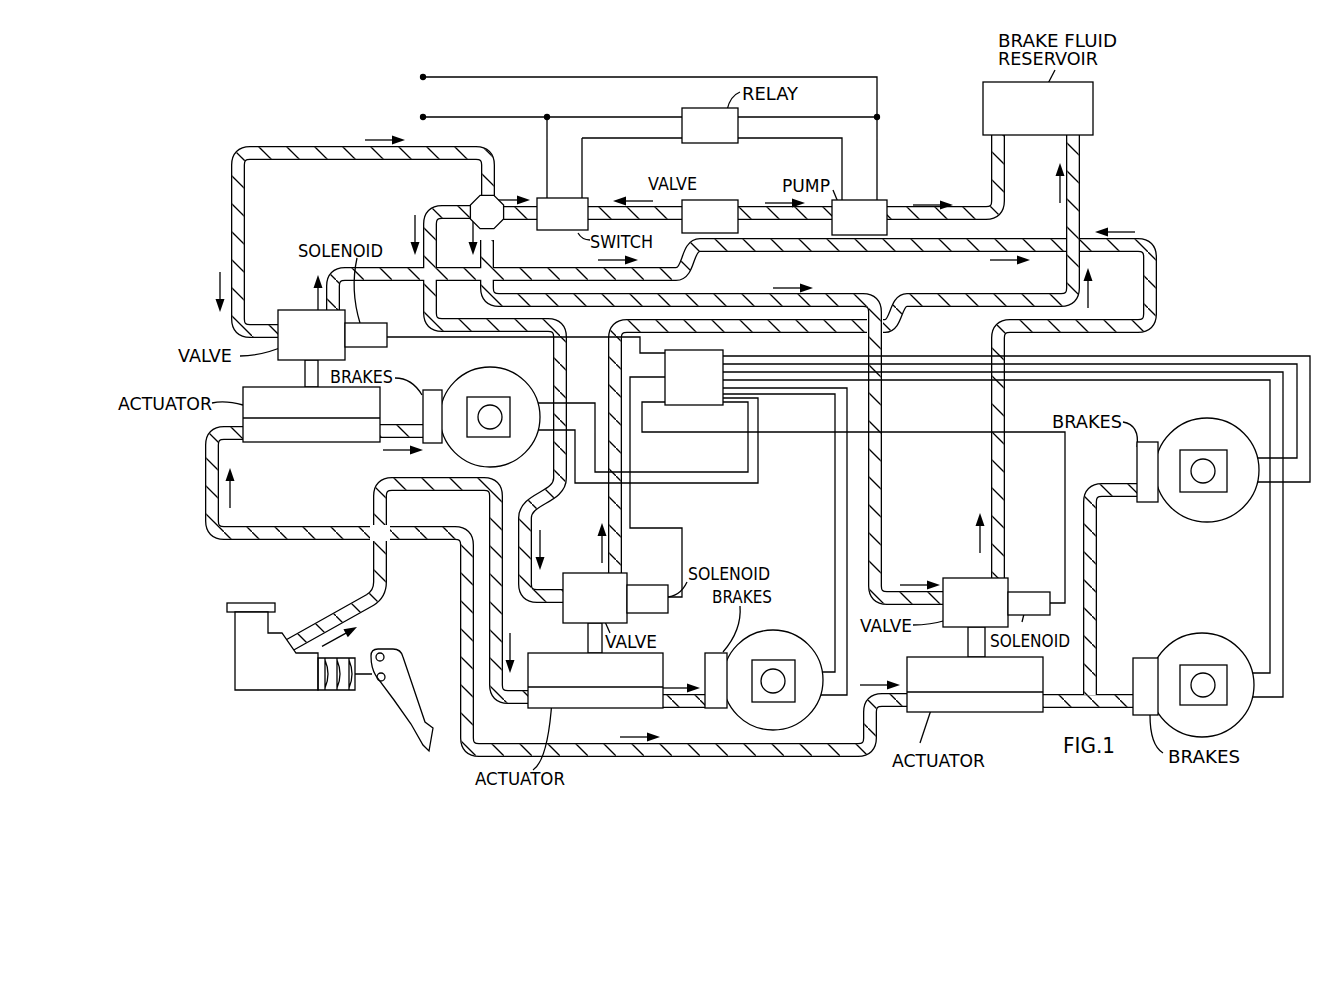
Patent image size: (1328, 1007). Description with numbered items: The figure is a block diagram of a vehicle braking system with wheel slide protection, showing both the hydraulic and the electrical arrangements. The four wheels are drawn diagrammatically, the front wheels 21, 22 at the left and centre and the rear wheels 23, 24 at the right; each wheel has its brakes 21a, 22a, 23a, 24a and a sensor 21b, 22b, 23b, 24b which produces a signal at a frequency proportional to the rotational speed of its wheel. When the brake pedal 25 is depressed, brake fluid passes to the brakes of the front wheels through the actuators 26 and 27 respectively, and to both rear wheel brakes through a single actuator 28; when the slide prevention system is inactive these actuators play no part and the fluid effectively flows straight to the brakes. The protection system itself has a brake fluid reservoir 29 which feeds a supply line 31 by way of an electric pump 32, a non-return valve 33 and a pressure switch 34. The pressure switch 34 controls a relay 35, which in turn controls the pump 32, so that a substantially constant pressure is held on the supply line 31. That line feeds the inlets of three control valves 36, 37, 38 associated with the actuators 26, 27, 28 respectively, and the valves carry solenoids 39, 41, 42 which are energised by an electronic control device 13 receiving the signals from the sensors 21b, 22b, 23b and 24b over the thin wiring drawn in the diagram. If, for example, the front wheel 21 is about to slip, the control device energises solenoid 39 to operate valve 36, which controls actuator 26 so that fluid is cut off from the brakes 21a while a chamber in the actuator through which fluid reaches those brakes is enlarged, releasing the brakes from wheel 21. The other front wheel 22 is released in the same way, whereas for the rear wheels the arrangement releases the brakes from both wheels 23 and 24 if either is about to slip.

The control unit 13 is at (702, 362).
The front wheel 21 is at (478, 378).
The brakes 21a is at (437, 398).
The sensor 21b is at (500, 405).
The front wheel 22 is at (773, 643).
The brakes 22a is at (723, 665).
The sensor 22b is at (790, 695).
The rear wheel 23 is at (1217, 510).
The brakes 23a is at (1147, 460).
The sensor 23b is at (1217, 458).
The rear wheel 24 is at (1220, 647).
The brakes 24a is at (1148, 668).
The sensor 24b is at (1213, 698).
The brake pedal 25 is at (393, 697).
The actuator 26 is at (323, 447).
The actuator 27 is at (590, 712).
The actuator 28 is at (958, 715).
The brake fluid reservoir 29 is at (1075, 108).
The supply line 31 is at (507, 193).
The electric pump 32 is at (870, 217).
The non-return valve 33 is at (697, 215).
The pressure switch 34 is at (583, 203).
The relay 35 is at (718, 130).
The control valve 36 is at (308, 317).
The control valve 37 is at (572, 587).
The control valve 38 is at (968, 587).
The solenoid 39 is at (370, 333).
The solenoid 41 is at (640, 597).
The solenoid 42 is at (1040, 598).